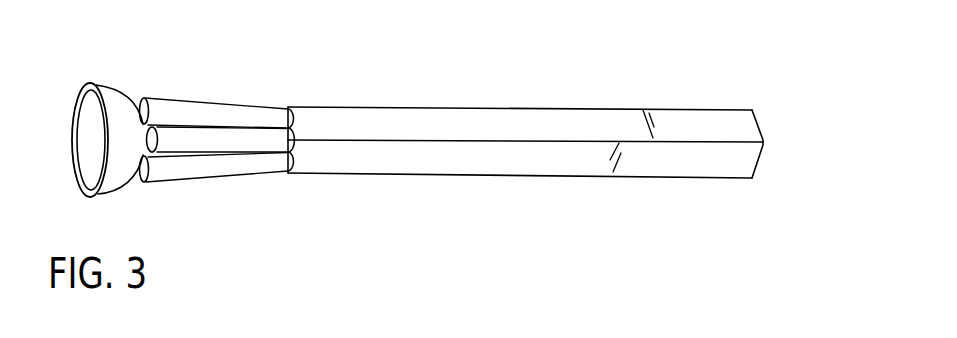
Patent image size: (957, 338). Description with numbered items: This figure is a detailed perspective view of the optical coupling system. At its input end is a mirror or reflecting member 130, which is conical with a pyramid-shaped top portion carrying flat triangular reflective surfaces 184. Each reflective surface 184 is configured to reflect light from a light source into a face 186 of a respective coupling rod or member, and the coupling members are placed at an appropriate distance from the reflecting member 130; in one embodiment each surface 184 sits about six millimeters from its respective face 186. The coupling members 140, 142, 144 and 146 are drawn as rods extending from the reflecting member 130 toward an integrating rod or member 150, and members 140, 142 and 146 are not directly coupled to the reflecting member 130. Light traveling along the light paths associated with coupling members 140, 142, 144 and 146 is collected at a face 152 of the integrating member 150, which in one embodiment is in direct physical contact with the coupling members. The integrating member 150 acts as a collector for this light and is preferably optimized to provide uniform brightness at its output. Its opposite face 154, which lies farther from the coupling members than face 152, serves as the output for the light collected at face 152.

The reflecting member 130 is at (75, 181).
The reflective surface 184 is at (133, 173).
The face 186 is at (143, 105).
The coupling member 144 is at (151, 116).
The coupling member 140 is at (248, 113).
The coupling member 146 is at (245, 167).
The coupling member 142 is at (291, 122).
The face 152 is at (294, 152).
The integrating member 150 is at (475, 166).
The face 154 is at (760, 158).